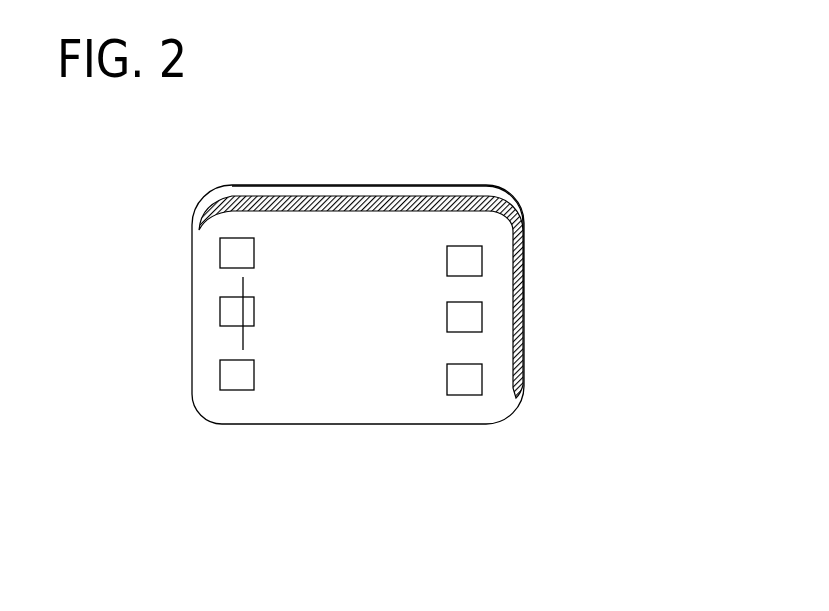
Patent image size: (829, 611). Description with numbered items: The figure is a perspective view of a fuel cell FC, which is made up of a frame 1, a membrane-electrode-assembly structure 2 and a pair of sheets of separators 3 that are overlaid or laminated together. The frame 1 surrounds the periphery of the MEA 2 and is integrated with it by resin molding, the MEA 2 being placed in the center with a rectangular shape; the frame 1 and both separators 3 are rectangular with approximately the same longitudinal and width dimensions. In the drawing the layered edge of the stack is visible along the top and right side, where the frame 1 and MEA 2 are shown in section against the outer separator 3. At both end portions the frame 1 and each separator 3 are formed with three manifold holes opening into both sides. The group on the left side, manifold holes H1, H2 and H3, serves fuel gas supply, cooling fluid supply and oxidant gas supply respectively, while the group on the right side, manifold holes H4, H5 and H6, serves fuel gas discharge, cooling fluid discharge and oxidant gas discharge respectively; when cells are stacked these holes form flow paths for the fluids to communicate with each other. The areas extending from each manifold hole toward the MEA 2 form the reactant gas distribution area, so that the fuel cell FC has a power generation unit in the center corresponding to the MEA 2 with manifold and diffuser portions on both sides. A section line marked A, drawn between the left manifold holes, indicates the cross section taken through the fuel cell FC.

The frame 1 is at (361, 240).
The membrane-electrode-assembly structure 2 is at (390, 197).
The separator 3 is at (330, 187).
The fuel cell FC is at (518, 187).
The manifold hole for fuel gas supply H1 is at (218, 238).
The manifold hole for cooling fluid supply H2 is at (220, 310).
The manifold hole for oxidant gas supply H3 is at (218, 382).
The manifold hole for fuel gas discharge H4 is at (478, 258).
The manifold hole for cooling fluid discharge H5 is at (473, 317).
The manifold hole for oxidant gas discharge H6 is at (480, 380).
The section line A- A is at (258, 277).